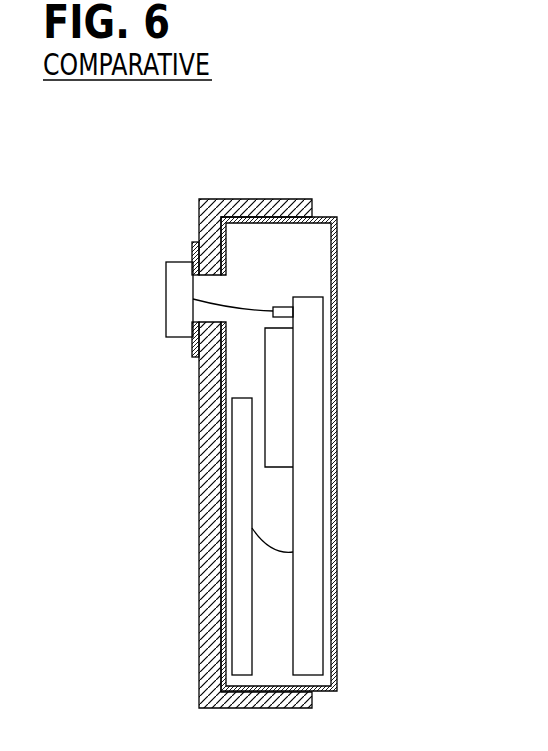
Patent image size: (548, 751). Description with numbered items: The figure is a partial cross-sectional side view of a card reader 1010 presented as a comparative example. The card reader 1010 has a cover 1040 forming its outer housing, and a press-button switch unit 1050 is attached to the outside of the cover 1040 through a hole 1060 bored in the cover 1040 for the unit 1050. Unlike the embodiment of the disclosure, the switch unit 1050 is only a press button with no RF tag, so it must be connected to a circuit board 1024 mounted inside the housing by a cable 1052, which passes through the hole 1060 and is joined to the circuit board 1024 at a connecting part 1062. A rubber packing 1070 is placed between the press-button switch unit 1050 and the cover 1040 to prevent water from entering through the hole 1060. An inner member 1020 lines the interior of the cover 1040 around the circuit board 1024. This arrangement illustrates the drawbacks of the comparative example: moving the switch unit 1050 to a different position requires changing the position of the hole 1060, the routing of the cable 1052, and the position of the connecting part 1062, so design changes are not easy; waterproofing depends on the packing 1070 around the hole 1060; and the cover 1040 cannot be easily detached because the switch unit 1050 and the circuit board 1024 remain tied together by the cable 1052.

The card reader 1010 is at (373, 163).
The cover 1040 is at (242, 198).
The cover / inner liner 1020 is at (326, 217).
The circuit board 1024 is at (313, 458).
The part connecting the cable to the circuit board 1062 is at (285, 306).
The cable 1052 is at (240, 310).
The press-button switch unit 1050 is at (166, 296).
The rubber packing 1070 is at (192, 250).
The hole 1060 is at (207, 321).